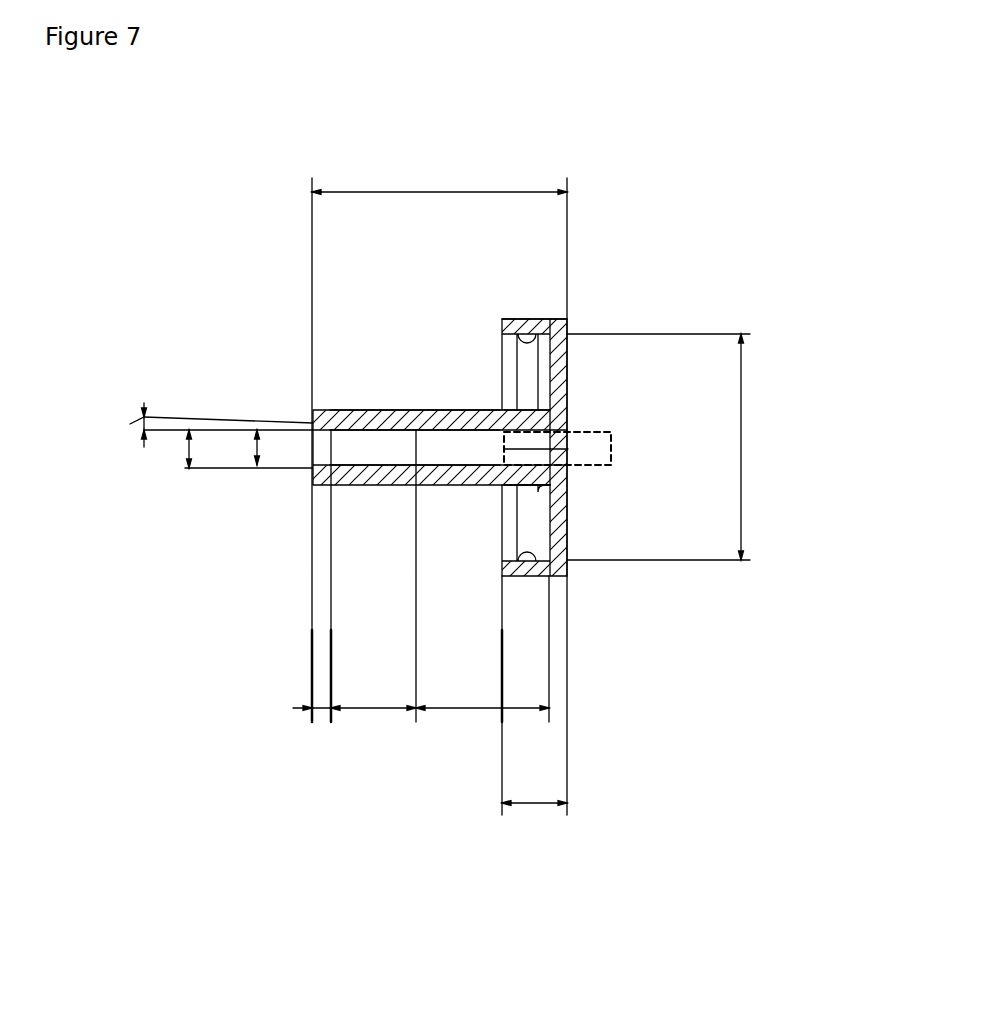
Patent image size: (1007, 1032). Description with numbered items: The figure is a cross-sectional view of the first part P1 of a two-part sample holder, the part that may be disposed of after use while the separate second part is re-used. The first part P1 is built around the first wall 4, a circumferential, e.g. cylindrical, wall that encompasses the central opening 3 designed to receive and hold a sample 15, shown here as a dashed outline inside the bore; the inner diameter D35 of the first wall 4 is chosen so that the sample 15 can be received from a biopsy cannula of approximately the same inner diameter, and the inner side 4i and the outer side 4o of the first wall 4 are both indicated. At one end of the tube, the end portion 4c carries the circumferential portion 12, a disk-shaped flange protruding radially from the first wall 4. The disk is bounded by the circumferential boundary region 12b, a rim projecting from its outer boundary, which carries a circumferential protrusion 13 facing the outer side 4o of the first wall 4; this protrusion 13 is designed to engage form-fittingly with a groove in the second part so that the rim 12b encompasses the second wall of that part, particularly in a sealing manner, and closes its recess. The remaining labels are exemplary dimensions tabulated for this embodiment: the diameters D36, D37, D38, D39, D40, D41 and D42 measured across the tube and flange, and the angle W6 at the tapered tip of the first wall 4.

The first wall 4 is at (368, 477).
The outer side of the first wall 4o is at (392, 410).
The inner surface of tube 4i is at (473, 460).
The end portion of the first wall 4c is at (525, 423).
The opening 3 is at (568, 449).
The circumferential portion 12 is at (568, 383).
The circumferential boundary region 12b is at (531, 320).
The circumferential protrusion 13 is at (525, 530).
The sample 15 is at (592, 465).
The first part P1 is at (712, 165).
The inner diameter of the first wall D35 is at (255, 455).
The dimension D36 is at (189, 450).
The dimension D37 is at (447, 190).
The dimension D38 is at (741, 440).
The dimension D39 is at (532, 805).
The dimension D40 is at (442, 708).
The dimension D41 is at (352, 708).
The dimension D42 is at (318, 708).
The angle W6 is at (143, 423).